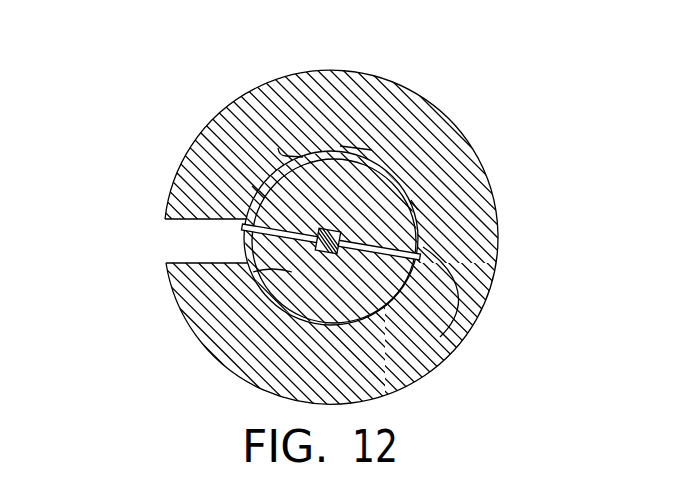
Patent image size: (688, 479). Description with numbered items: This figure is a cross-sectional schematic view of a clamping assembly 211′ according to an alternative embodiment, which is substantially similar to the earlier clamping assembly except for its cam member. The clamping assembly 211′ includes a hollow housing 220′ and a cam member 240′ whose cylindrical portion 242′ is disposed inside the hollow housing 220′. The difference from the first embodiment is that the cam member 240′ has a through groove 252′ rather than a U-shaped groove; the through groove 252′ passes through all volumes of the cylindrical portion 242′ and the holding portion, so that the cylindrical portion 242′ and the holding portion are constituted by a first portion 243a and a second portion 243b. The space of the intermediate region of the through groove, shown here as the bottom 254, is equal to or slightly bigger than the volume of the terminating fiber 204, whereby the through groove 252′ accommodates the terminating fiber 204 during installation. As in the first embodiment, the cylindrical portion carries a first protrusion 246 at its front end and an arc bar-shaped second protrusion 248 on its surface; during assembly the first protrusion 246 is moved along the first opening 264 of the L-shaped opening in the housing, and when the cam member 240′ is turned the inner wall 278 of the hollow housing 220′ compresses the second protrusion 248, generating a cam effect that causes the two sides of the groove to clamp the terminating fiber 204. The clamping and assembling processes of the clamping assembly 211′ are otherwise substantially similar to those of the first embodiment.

The clamping assembly 211′ is at (122, 80).
The first protrusion 246 is at (278, 148).
The inner wall 278 is at (318, 150).
The hollow housing 220′ is at (360, 137).
The second protrusion 248 is at (358, 145).
The terminating fiber 204 is at (405, 190).
The cam member 240′ is at (415, 205).
The first portion 243a is at (452, 268).
The second portion 243b is at (262, 272).
The cylindrical portion 242′ is at (433, 273).
The first bottom 254 is at (445, 357).
The first opening 264 is at (178, 242).
The through groove 252′ is at (258, 192).